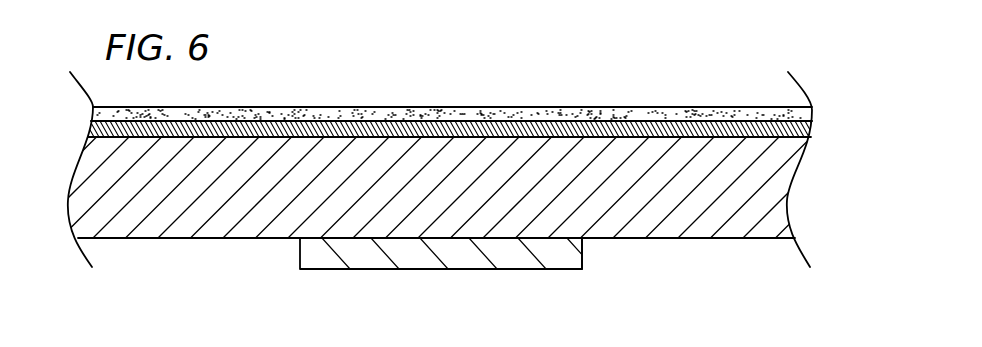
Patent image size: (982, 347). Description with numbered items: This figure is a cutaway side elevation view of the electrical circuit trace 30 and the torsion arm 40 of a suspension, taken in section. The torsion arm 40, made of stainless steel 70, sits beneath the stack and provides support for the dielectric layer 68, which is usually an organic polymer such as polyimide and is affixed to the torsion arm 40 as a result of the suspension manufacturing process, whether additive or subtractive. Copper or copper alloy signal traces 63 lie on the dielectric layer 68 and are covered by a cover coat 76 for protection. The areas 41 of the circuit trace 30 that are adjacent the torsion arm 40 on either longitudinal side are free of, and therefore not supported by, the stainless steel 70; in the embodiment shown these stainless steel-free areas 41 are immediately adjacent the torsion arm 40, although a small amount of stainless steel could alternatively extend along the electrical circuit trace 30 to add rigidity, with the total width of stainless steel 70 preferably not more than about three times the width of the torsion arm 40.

The electrical circuit trace 30 is at (589, 93).
The cover coat 76 is at (810, 110).
The signal traces 63 is at (812, 130).
The dielectric layer 68 is at (780, 210).
The stainless steel-free areas 41 is at (178, 238).
The torsion arm 40 is at (443, 269).
The stainless steel 70 is at (582, 252).